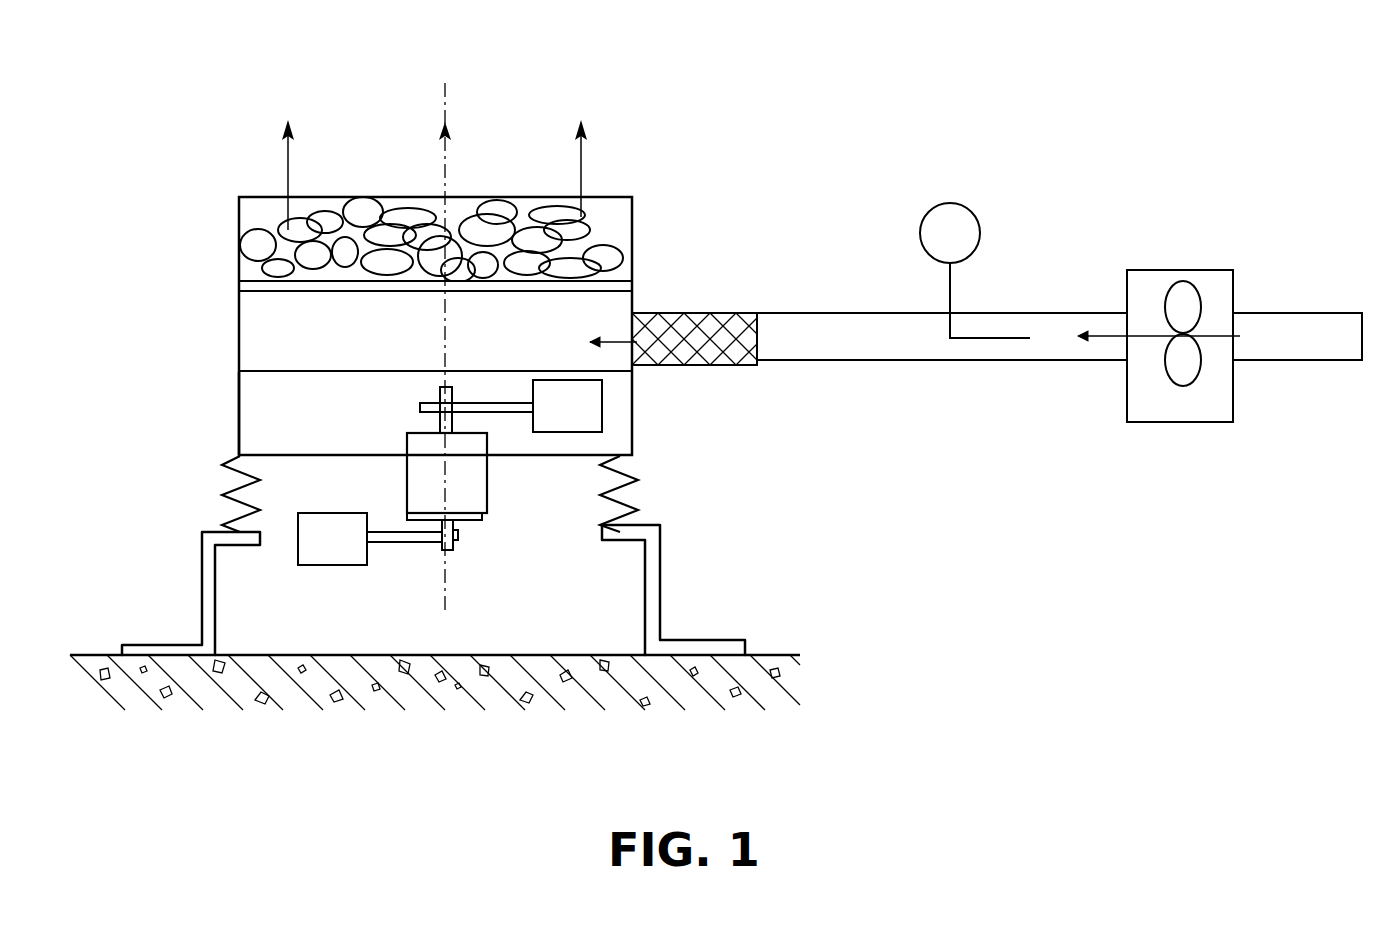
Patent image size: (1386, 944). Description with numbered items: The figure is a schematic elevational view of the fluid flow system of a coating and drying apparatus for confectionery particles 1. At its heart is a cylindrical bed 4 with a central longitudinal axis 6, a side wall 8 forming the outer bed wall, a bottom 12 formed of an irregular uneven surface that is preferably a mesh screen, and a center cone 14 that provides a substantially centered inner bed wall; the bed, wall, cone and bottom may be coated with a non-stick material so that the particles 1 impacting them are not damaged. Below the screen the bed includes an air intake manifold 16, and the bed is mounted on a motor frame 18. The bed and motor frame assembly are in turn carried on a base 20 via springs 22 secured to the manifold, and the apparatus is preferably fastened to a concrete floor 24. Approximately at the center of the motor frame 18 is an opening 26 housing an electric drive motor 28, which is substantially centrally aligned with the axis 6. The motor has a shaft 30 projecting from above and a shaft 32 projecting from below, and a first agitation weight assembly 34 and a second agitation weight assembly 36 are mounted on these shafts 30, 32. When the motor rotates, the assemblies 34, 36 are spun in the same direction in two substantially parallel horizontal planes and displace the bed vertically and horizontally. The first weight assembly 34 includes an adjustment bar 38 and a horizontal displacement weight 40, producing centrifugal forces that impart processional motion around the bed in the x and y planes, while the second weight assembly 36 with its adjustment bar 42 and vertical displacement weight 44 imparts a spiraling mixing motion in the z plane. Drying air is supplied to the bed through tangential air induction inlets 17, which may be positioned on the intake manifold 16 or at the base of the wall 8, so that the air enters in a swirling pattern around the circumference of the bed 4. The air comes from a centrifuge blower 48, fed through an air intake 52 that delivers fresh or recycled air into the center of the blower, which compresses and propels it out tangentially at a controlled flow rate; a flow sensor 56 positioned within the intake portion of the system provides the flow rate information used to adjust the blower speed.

The confectionery particles 1 is at (241, 239).
The cylindrical bed 4 is at (615, 176).
The central longitudinal axis 6 is at (447, 122).
The side wall 8 is at (633, 210).
The bottom 12 is at (230, 288).
The center cone 14 is at (433, 265).
The air intake manifold 16 is at (238, 331).
The tangential air induction inlets 17 is at (680, 327).
The motor frame 18 is at (238, 423).
The base 20 is at (176, 582).
The springs 22 is at (206, 484).
The concrete floor 24 is at (598, 655).
The opening 26 is at (407, 488).
The electric drive motor 28 is at (467, 517).
The shaft 30 is at (440, 427).
The shaft 32 is at (446, 553).
The first agitation weight assembly 34 is at (517, 433).
The second agitation weight assembly 36 is at (358, 575).
The adjustment bar 38 is at (493, 402).
The horizontal displacement weight 40 is at (605, 413).
The adjustment bar 42 is at (383, 545).
The vertical displacement weight 44 is at (311, 580).
The centrifuge blower 48 is at (1150, 280).
The air intake 52 is at (1293, 323).
The flow sensor 56 is at (952, 210).